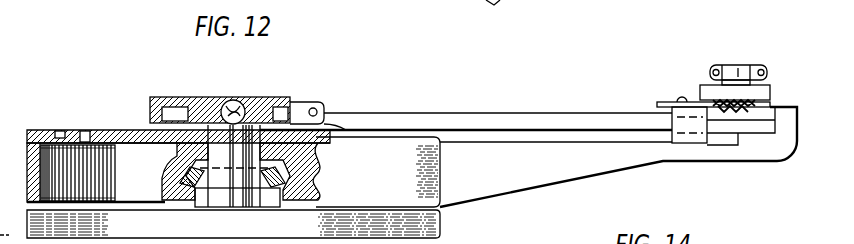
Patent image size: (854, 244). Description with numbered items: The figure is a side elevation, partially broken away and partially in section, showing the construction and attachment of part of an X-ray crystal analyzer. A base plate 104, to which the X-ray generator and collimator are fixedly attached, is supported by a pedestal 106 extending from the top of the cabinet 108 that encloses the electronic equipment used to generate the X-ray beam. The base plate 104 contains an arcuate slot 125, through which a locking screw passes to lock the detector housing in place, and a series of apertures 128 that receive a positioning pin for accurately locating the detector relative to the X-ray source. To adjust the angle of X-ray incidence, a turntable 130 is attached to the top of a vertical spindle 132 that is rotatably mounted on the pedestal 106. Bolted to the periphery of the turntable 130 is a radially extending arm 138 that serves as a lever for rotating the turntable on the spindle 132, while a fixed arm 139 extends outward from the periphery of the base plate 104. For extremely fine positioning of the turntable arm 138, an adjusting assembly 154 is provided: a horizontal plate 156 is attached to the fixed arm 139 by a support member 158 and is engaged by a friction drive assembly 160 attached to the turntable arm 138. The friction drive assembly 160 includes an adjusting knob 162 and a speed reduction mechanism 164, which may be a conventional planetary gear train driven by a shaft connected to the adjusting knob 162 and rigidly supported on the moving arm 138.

The base plate 104 is at (377, 178).
The pedestal 106 is at (218, 203).
The cabinet 108 is at (418, 227).
The arcuate slot 125 is at (85, 131).
The apertures 128 is at (60, 131).
The turntable 130 is at (275, 97).
The vertical spindle 132 is at (220, 145).
The radially extending arm 138 is at (503, 120).
The fixed arm 139 is at (658, 150).
The adjusting assembly 154 is at (735, 74).
The horizontal plate 156 is at (658, 100).
The support member 158 is at (697, 137).
The friction drive assembly 160 is at (773, 100).
The adjusting knob 162 is at (743, 68).
The speed reduction mechanism 164 is at (705, 84).